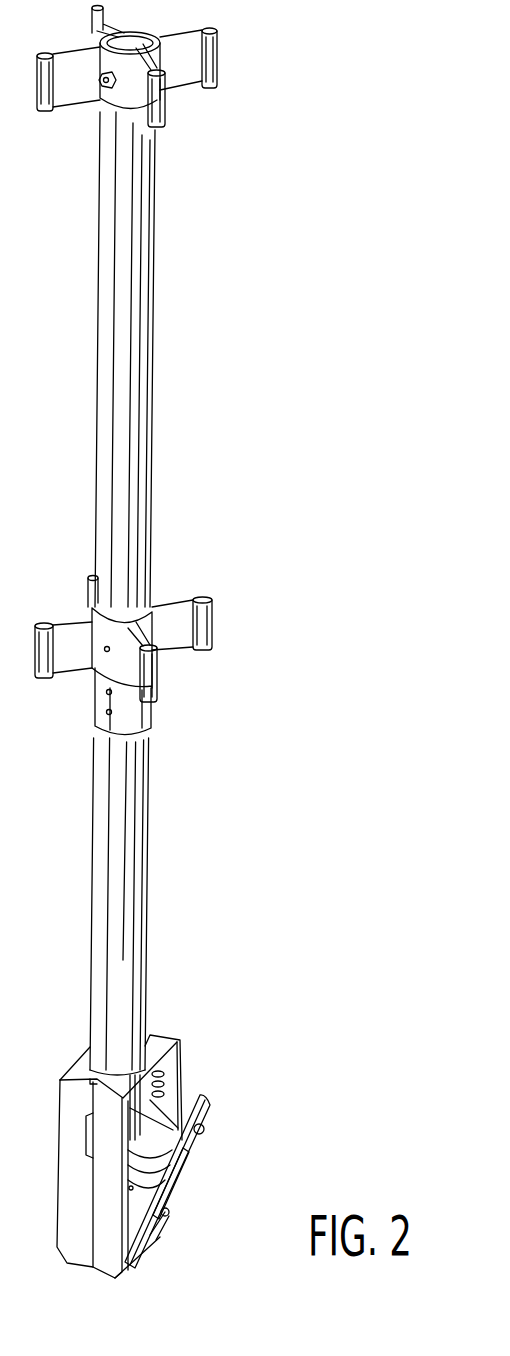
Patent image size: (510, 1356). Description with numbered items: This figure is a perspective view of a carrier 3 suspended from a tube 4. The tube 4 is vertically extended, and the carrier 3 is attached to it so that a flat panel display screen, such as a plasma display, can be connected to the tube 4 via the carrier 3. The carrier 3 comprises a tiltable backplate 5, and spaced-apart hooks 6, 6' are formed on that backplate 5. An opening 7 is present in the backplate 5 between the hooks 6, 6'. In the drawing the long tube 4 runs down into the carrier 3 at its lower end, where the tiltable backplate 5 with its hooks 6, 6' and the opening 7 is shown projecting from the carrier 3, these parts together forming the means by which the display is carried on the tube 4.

The carrier 3 is at (203, 1060).
The tube 4 is at (130, 858).
The tiltable backplate 5 is at (180, 1155).
The hook 6 is at (189, 1220).
The hinge pin 6' is at (233, 1122).
The opening 7 is at (172, 1177).